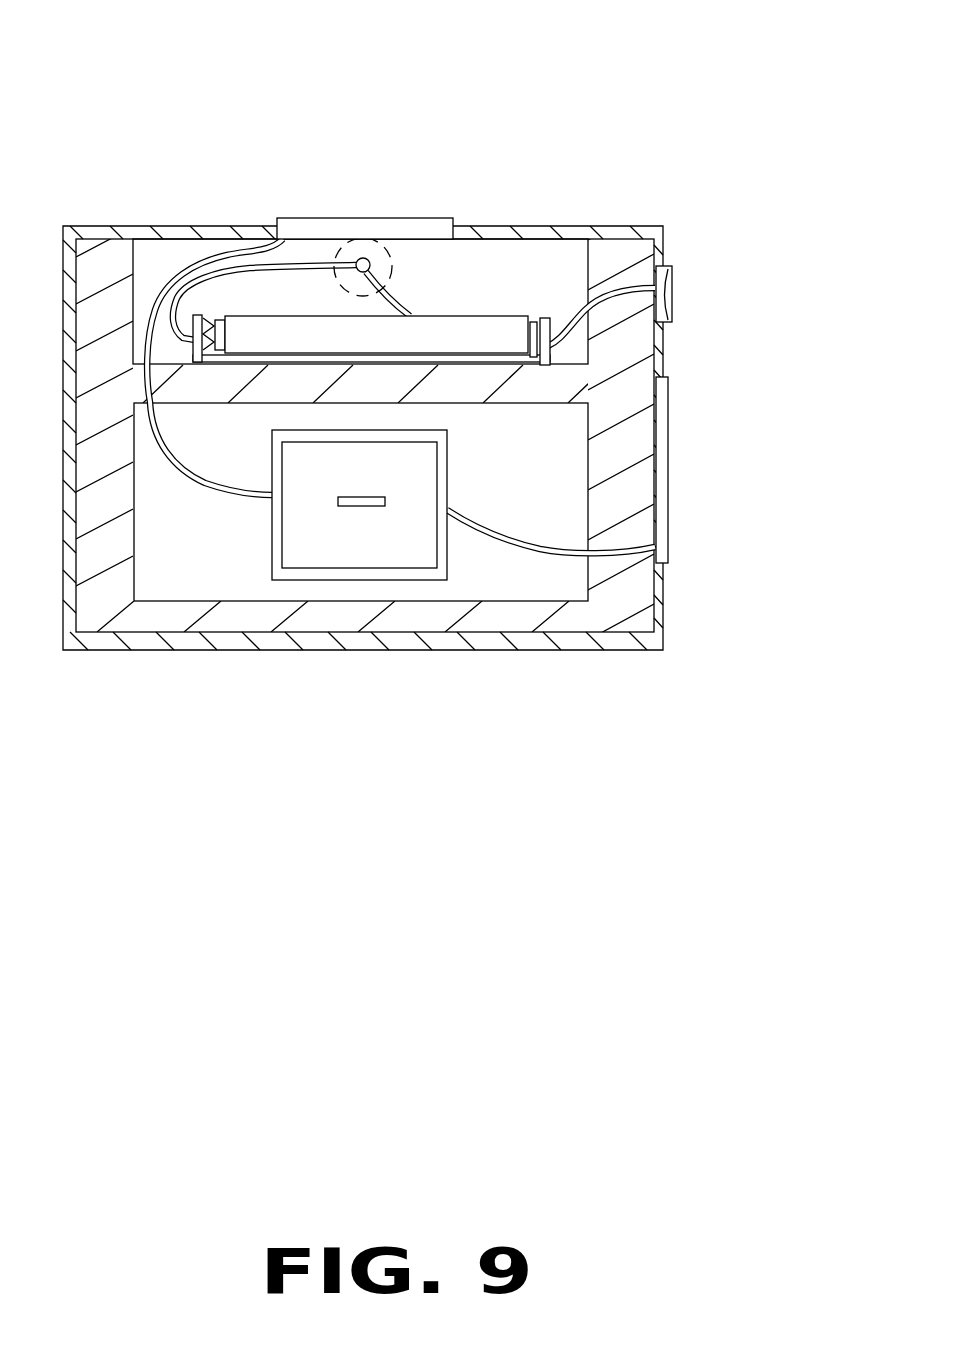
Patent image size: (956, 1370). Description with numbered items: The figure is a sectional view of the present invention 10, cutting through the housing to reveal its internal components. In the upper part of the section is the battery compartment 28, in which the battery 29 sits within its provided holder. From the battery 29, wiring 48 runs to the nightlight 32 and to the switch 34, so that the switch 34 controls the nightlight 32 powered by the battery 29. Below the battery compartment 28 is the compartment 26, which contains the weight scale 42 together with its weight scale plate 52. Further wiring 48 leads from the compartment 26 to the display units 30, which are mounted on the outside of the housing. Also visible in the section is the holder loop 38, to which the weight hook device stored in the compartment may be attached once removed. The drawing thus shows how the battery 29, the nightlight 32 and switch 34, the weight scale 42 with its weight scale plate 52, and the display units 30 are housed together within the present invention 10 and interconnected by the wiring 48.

The present invention 10 is at (682, 162).
The compartment 26 is at (363, 596).
The battery compartment 28 is at (148, 268).
The battery 29 is at (462, 313).
The display units 30 is at (299, 217).
The nightlight 32 is at (393, 257).
The switch 34 is at (673, 297).
The holder loop 38 is at (385, 497).
The weight scale 42 is at (412, 545).
The wiring 48 is at (315, 263).
The weight scale plate 52 is at (329, 535).